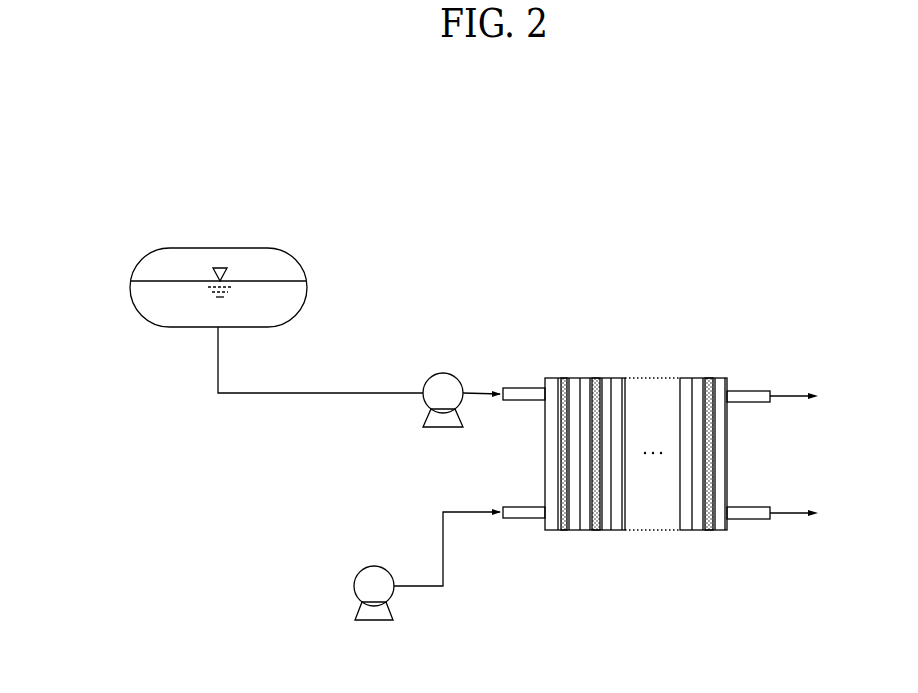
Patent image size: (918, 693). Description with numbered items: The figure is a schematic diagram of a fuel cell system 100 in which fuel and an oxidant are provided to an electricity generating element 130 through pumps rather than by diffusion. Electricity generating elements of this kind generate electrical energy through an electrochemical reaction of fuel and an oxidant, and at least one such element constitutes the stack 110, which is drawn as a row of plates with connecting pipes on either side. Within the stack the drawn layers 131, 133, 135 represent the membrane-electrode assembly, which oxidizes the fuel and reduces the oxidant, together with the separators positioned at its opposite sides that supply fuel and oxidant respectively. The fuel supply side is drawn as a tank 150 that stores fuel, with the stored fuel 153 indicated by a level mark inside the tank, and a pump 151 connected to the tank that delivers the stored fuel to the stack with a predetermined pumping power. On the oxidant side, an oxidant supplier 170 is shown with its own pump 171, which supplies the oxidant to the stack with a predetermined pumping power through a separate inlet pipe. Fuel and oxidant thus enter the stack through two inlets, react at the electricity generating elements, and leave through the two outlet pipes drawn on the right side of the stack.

The fuel cell system 100 is at (540, 253).
The stack 110 is at (695, 363).
The electricity generating element 130 is at (638, 633).
The electrolyte membrane 131 is at (593, 530).
The anode electrode 133 is at (585, 530).
The cathode electrode 135 is at (600, 530).
The fuel tank 150 is at (121, 262).
The fuel pump 151 is at (448, 373).
The fuel level / fuel 153 is at (220, 248).
The oxidant supply unit 170 is at (345, 565).
The oxidant pump 171 is at (378, 566).